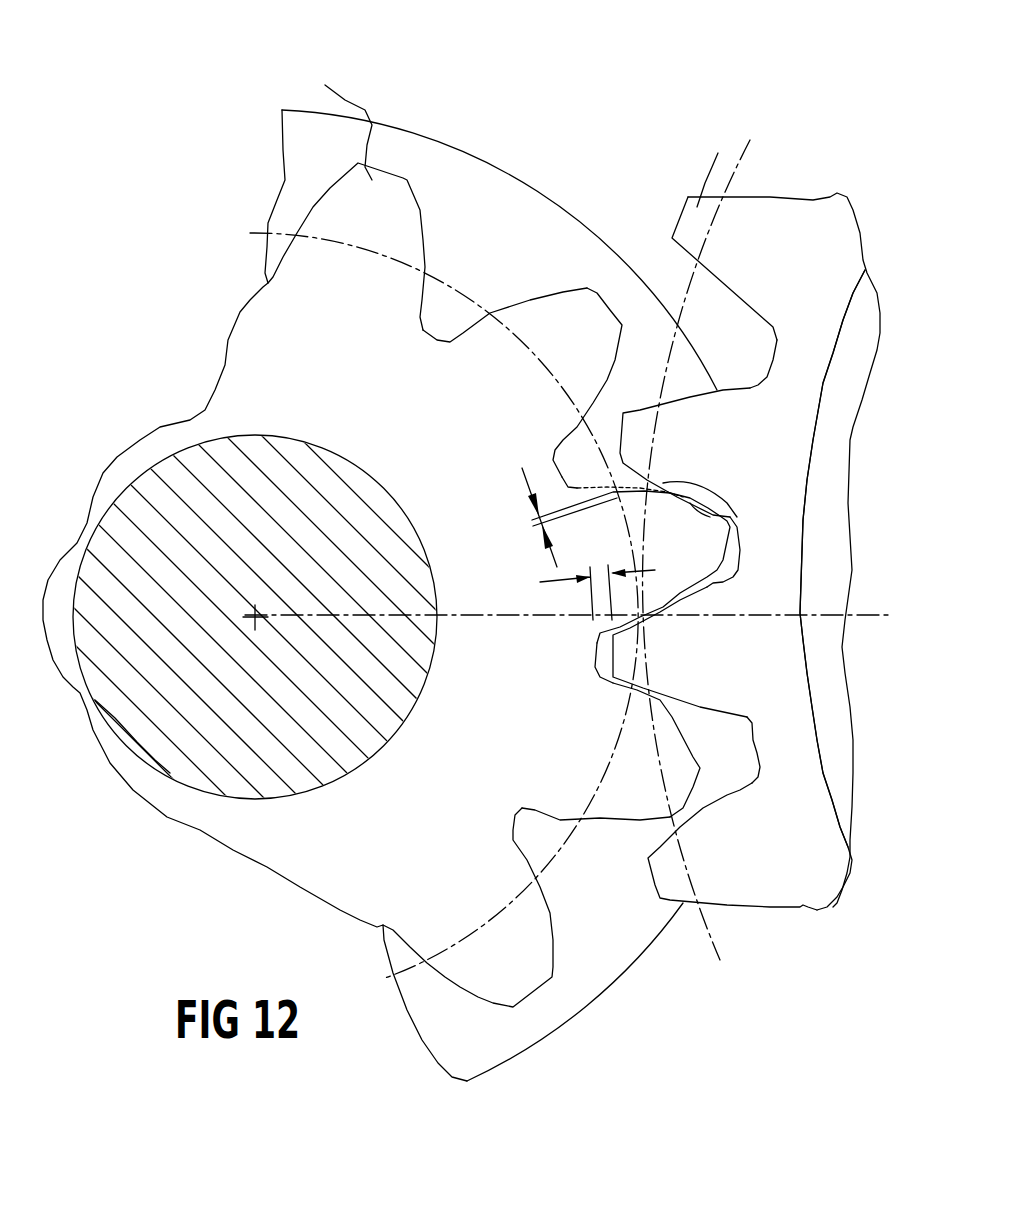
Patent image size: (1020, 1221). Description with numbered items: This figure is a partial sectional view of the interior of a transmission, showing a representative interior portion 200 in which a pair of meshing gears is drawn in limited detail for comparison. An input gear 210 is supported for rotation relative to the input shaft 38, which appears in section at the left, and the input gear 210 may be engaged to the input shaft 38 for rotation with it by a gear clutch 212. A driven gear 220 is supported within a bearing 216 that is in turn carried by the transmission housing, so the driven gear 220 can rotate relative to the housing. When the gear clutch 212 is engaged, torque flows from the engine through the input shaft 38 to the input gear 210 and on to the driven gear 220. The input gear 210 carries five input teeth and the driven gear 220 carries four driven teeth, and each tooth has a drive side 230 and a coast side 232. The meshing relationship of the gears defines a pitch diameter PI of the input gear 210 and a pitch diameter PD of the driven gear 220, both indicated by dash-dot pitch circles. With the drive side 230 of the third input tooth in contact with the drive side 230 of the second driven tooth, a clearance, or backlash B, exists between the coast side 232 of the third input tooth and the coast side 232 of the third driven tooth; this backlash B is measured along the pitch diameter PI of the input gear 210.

The interior portion 200 is at (426, 76).
The input shaft 38 is at (220, 750).
The input gear 210 is at (532, 156).
The gear clutch 212 is at (583, 980).
The bearing 216 is at (835, 783).
The driven gear 220 is at (630, 191).
The drive side 230 is at (423, 207).
The coast side 232 is at (328, 187).
The pitch diameter of the input gear PI is at (345, 248).
The pitch diameter of the driven gear PD is at (720, 210).
The backlash B is at (522, 478).